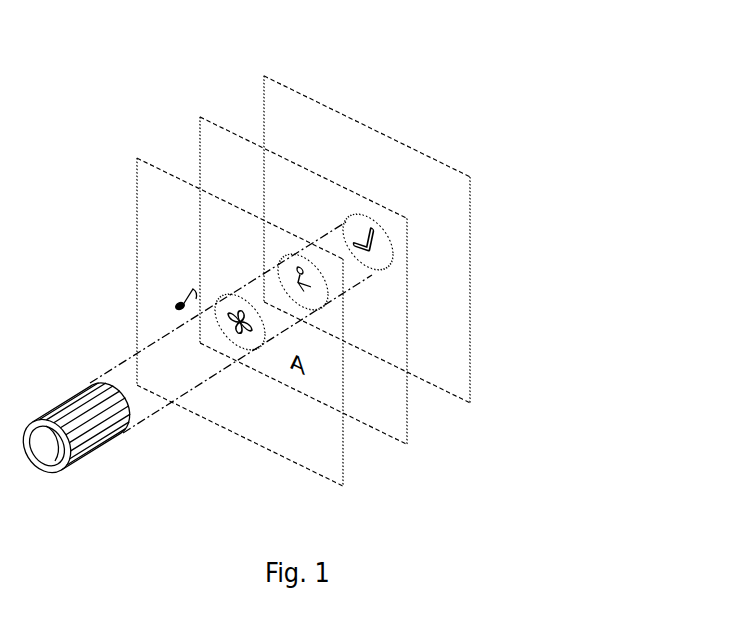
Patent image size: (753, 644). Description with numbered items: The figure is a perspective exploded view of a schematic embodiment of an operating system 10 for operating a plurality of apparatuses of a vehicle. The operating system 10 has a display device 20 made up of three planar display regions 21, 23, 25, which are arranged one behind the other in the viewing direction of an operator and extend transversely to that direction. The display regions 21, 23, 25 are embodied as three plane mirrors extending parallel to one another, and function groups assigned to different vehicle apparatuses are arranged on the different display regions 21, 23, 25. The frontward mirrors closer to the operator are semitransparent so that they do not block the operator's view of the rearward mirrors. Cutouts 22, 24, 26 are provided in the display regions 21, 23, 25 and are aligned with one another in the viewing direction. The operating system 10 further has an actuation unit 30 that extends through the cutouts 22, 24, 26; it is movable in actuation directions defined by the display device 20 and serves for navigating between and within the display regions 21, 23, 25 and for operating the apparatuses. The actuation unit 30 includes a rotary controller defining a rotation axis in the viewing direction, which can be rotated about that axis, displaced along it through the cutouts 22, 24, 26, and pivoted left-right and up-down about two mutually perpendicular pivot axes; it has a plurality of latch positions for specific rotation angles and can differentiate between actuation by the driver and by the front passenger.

The operating system 10 is at (490, 124).
The display device 20 is at (503, 461).
The display region 21 is at (470, 360).
The cutout 22 is at (366, 213).
The display region 23 is at (407, 400).
The cutout 24 is at (300, 254).
The display region 25 is at (343, 443).
The cutout 26 is at (237, 294).
The actuation unit 30 is at (98, 438).